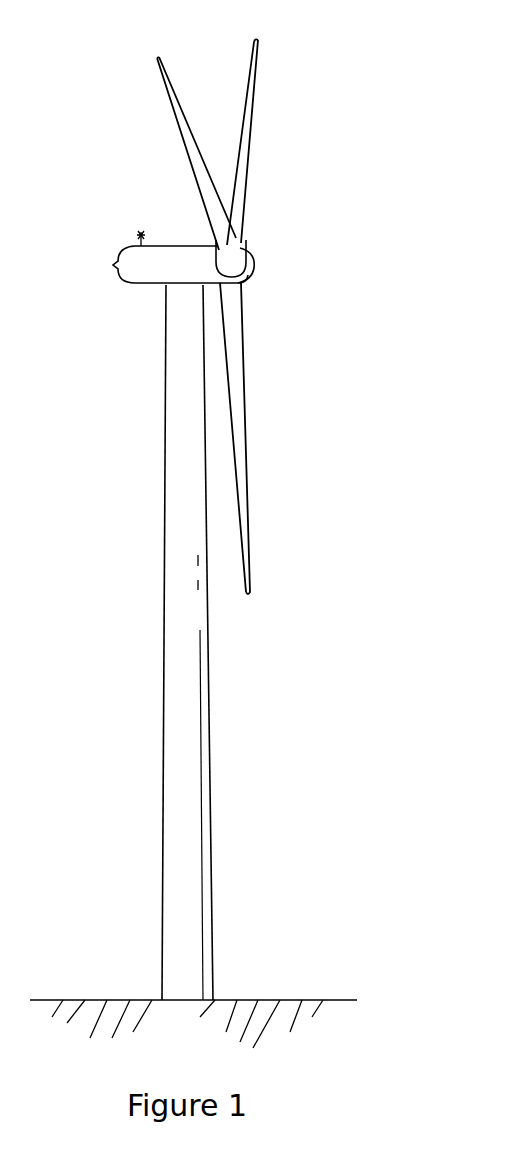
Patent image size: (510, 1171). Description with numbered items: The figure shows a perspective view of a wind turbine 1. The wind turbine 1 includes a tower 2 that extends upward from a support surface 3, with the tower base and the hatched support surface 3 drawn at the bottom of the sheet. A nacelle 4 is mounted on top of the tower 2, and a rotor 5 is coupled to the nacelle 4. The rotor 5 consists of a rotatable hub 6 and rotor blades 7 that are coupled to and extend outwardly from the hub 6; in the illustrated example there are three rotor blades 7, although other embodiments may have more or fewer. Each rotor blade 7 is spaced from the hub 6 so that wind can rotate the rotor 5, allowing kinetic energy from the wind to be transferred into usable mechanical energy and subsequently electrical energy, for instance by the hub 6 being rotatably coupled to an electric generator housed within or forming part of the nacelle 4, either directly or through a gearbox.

The wind turbine 1 is at (223, 533).
The tower 2 is at (178, 742).
The support surface 3 is at (100, 1000).
The nacelle 4 is at (150, 287).
The rotor 5 is at (241, 306).
The rotatable hub 6 is at (251, 274).
The rotor blade 7 is at (248, 78).